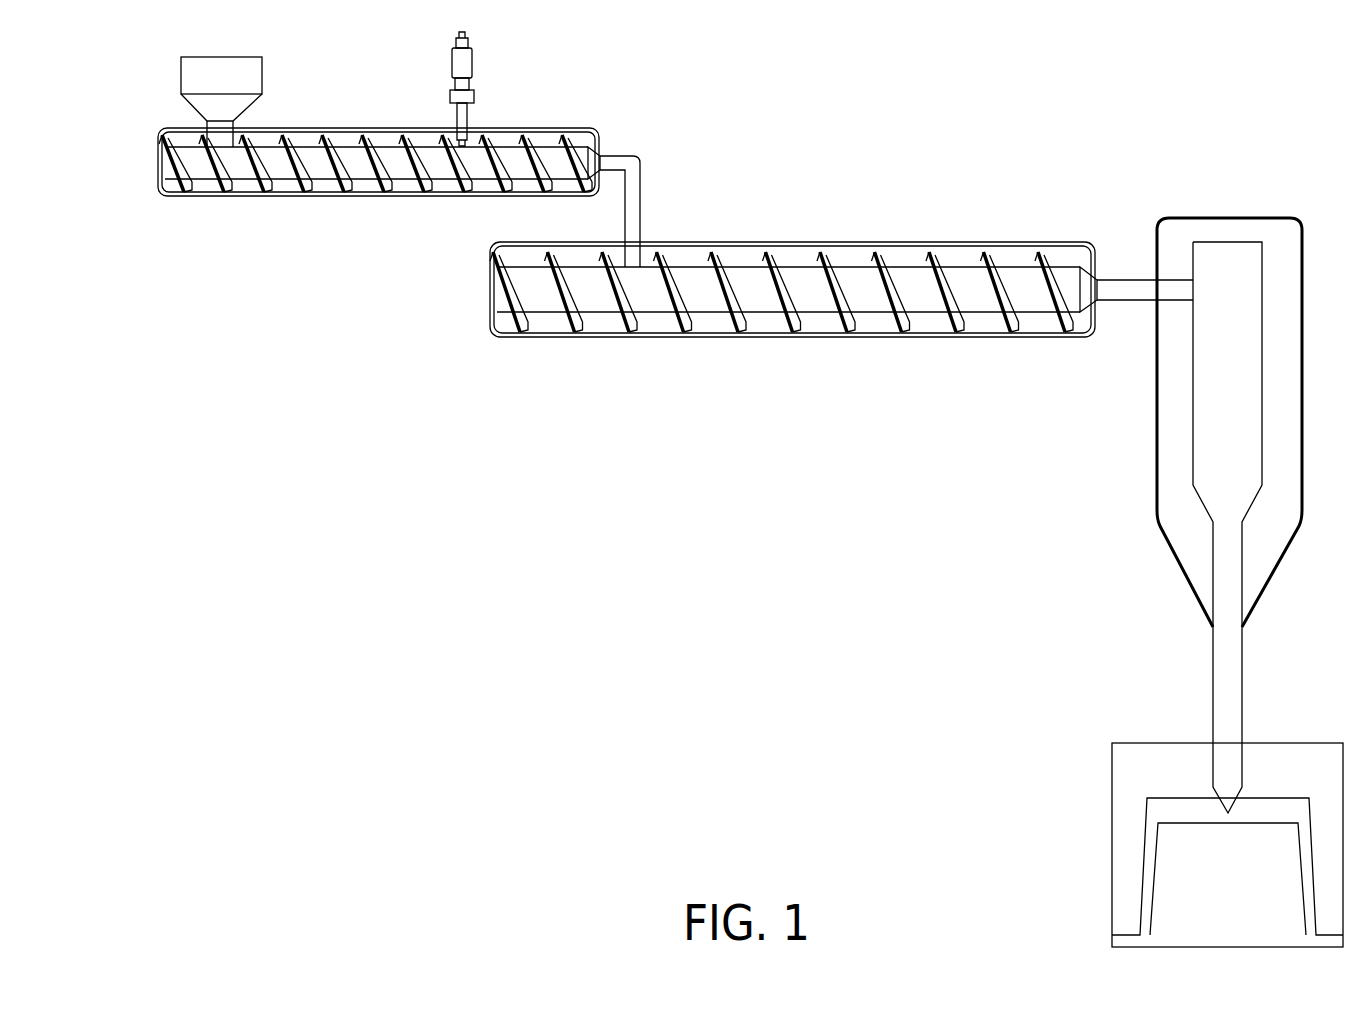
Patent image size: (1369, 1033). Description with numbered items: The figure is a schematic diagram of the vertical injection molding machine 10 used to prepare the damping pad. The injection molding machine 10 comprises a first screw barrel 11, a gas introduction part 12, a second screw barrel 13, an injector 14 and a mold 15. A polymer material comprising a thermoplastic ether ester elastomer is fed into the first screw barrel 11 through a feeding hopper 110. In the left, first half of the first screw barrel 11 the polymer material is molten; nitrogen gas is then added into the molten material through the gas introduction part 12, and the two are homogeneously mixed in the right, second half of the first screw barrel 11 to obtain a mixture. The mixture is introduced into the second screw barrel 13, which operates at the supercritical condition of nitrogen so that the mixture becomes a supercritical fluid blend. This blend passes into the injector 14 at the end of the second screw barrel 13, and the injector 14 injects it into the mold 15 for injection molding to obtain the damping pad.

The vertical injection molding machine 10 is at (1147, 133).
The feeding hopper 110 is at (197, 74).
The first screw barrel 11 is at (355, 138).
The gas introduction part 12 is at (468, 72).
The second screw barrel 13 is at (790, 253).
The injector 14 is at (1287, 295).
The mold 15 is at (1290, 760).